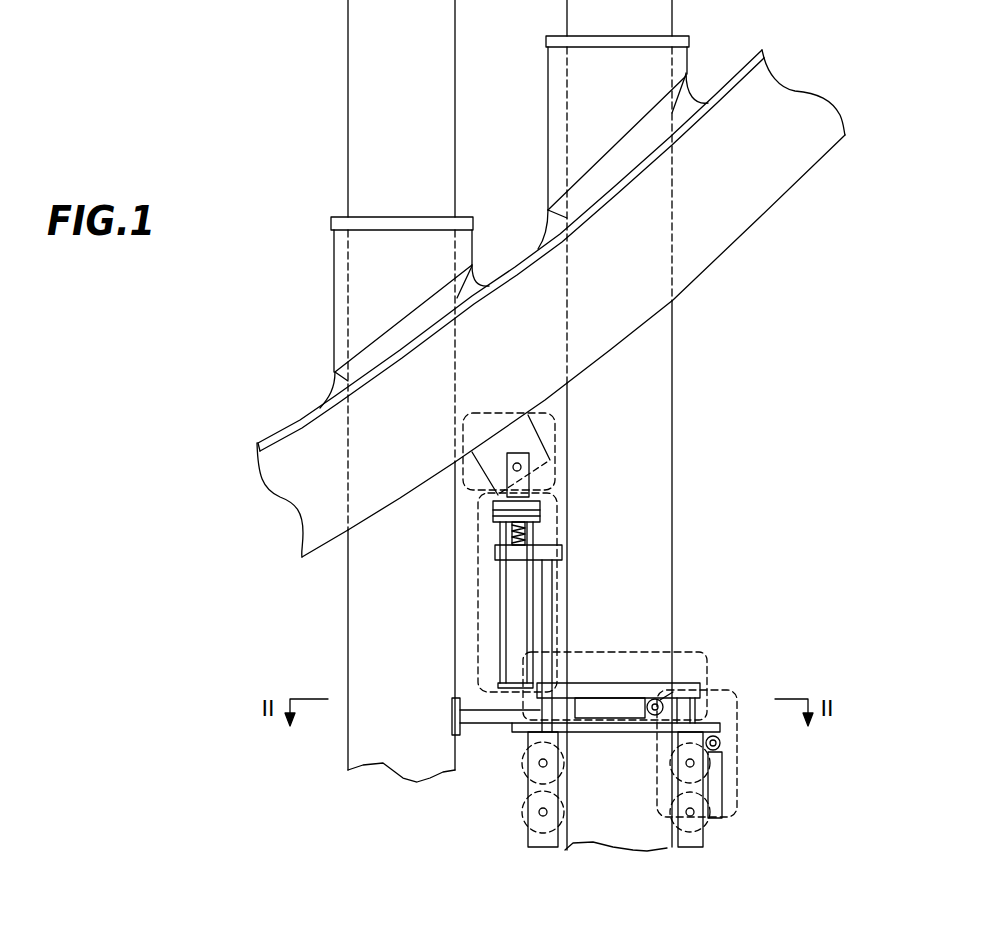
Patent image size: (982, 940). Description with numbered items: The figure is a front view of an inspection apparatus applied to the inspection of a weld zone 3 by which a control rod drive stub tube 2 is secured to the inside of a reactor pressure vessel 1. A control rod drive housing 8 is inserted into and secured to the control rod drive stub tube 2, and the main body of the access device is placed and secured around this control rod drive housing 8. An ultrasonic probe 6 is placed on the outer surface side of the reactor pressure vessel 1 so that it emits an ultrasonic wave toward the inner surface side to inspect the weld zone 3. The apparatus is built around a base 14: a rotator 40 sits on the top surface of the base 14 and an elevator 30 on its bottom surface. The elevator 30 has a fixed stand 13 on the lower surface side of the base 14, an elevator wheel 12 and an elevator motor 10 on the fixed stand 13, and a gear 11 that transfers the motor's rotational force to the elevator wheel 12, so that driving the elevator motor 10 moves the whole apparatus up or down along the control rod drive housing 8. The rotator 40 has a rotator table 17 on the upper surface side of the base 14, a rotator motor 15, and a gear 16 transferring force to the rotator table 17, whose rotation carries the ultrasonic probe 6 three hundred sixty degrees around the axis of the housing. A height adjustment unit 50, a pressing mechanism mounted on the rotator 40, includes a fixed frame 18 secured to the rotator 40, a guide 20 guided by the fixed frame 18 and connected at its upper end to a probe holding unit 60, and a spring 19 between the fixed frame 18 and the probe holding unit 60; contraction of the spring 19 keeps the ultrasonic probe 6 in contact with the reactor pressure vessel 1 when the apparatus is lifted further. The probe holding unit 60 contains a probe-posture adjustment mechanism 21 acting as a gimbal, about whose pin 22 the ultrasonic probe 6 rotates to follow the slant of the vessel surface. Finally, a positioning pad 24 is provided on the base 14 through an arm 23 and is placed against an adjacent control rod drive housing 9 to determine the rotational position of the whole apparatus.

The reactor pressure vessel 1 is at (795, 152).
The control rod drive stub tube 2 is at (682, 62).
The weld zone 3 is at (685, 112).
The ultrasonic probe 6 is at (523, 435).
The control rod drive housing 8 is at (650, 352).
The control rod drive housing 9 is at (370, 738).
The elevator motor 10 is at (720, 768).
The gear 11 is at (720, 743).
The elevator wheel 12 is at (720, 787).
The fixed stand 13 is at (680, 787).
The base 14 is at (633, 727).
The rotator motor 15 is at (588, 708).
The gear 16 is at (662, 698).
The rotator table 17 is at (638, 690).
The fixed frame 18 is at (547, 578).
The spring 19 is at (538, 528).
The guide 20 is at (501, 593).
The probe-posture adjustment mechanism 21 is at (535, 481).
The pin 22 is at (521, 466).
The arm 23 is at (488, 715).
The positioning pad 24 is at (452, 712).
The elevator 30 is at (737, 813).
The rotator 40 is at (707, 670).
The height adjustment unit 50 is at (480, 635).
The probe holding unit 60 is at (508, 412).